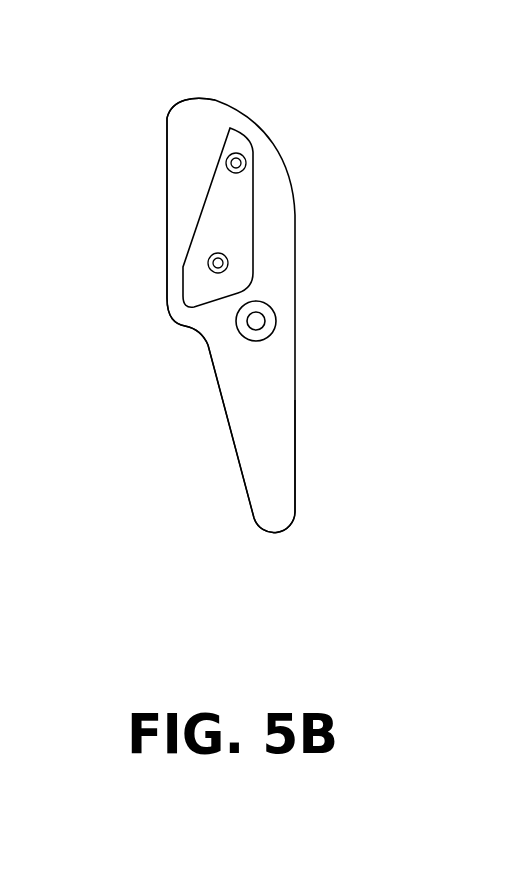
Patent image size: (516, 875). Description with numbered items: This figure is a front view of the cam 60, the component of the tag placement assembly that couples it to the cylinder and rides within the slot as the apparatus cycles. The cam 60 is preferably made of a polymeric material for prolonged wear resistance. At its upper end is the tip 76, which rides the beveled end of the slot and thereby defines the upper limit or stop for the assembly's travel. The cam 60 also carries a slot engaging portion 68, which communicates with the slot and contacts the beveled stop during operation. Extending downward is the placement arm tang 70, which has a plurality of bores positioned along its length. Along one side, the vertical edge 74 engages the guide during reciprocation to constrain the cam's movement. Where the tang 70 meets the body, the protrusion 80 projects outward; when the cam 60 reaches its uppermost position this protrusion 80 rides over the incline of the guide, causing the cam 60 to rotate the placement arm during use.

The cam 60 is at (258, 124).
The slot engaging portion 68 is at (247, 220).
The placement arm tang 70 is at (275, 500).
The vertical edge 74 is at (167, 207).
The tip 76 is at (230, 128).
The protrusion 80 is at (172, 318).